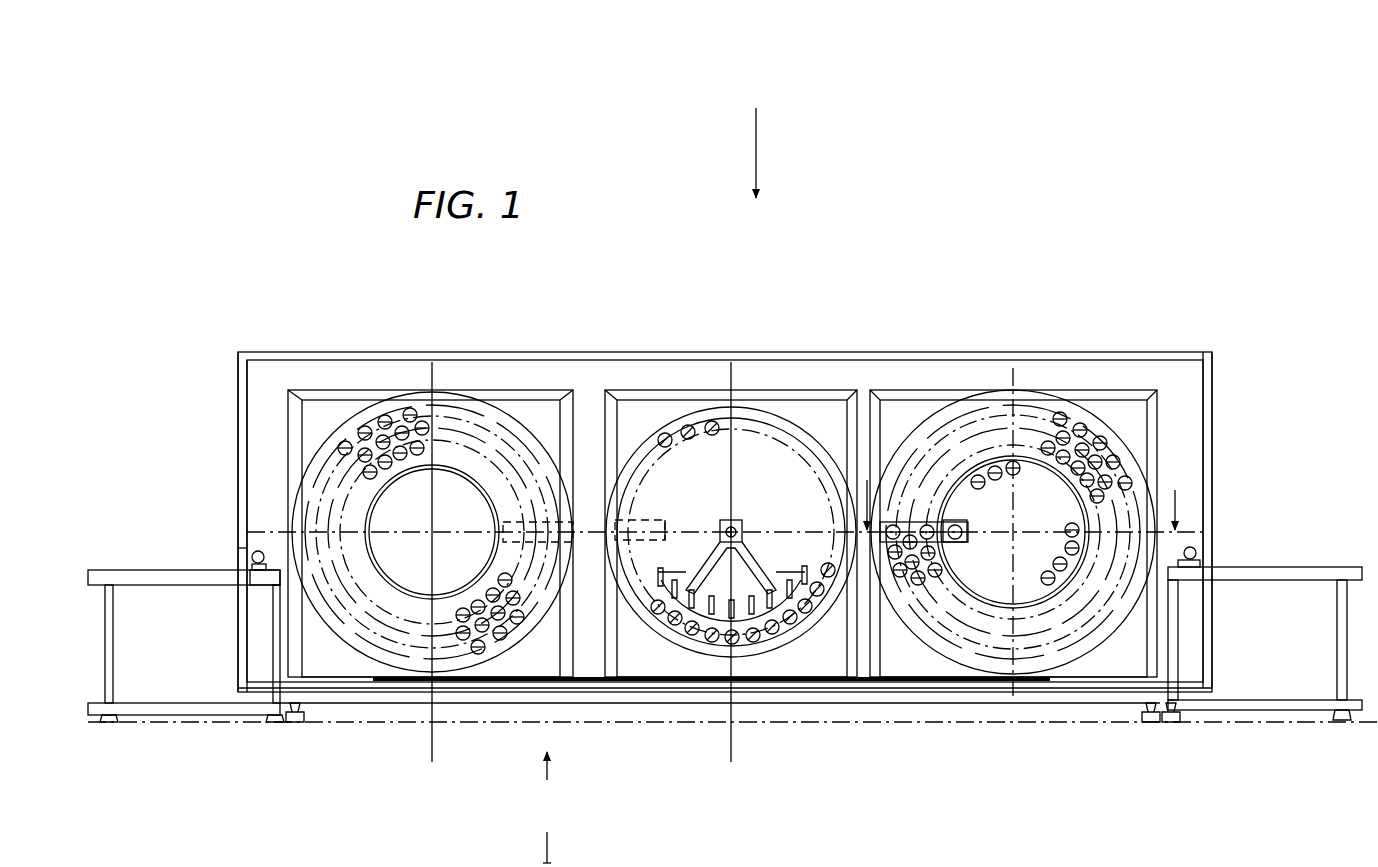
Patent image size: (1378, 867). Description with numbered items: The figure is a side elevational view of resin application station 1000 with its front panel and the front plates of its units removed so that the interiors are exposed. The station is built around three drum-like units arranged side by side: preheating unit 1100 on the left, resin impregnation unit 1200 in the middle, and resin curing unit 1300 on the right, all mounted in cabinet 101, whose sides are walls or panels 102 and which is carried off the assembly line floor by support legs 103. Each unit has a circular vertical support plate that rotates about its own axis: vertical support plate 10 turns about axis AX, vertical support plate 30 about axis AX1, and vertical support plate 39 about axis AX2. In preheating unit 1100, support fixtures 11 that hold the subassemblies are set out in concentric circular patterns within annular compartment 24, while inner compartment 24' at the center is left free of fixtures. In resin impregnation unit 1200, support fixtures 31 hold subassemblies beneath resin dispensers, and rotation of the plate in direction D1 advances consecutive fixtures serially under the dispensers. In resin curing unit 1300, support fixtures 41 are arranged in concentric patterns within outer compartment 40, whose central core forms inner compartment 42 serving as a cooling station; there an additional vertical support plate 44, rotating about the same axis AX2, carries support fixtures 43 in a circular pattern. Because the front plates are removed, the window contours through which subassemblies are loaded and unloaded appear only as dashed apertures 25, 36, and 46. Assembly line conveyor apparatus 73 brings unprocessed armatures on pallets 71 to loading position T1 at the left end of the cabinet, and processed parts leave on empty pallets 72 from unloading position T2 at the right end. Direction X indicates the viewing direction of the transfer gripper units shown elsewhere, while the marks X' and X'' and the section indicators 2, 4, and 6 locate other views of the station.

The resin application station 1000 is at (920, 103).
The vertical support plate 10 is at (540, 430).
The support fixtures 11 is at (400, 412).
The annular compartment 24 is at (409, 484).
The inner compartment 24' is at (440, 501).
The aperture 25 is at (492, 552).
The axis AX is at (432, 532).
The vertical support plate 30 is at (790, 440).
The support fixtures 31 is at (732, 579).
The aperture 36 is at (688, 518).
The axis AX1 is at (738, 530).
The direction D1 is at (660, 664).
The outer compartment 40 is at (985, 405).
The vertical support plate 39 is at (1090, 405).
The support fixtures 41 is at (1110, 445).
The inner compartment 42 is at (975, 570).
The support fixtures 43 is at (1060, 560).
The vertical support plate 44 is at (1063, 590).
The aperture 46 is at (908, 460).
The axis AX2 is at (1013, 530).
The pallets 71 is at (263, 588).
The empty pallets 72 is at (1192, 582).
The assembly line conveyor apparatus 73 is at (1295, 567).
The cabinet 101 is at (595, 378).
The walls or panels 102 is at (238, 482).
The support legs 103 is at (297, 722).
The preheating unit 1100 is at (365, 780).
The resin impregnation unit 1200 is at (657, 797).
The resin curing unit 1300 is at (1020, 772).
The loading position T1 is at (259, 540).
The unloading position T2 is at (1196, 545).
The direction X is at (768, 153).
The reference direction X' is at (557, 846).
The reference direction X'' is at (561, 773).
The section line 2 is at (436, 372).
The section line 4 is at (735, 372).
The section line 6 is at (1022, 492).